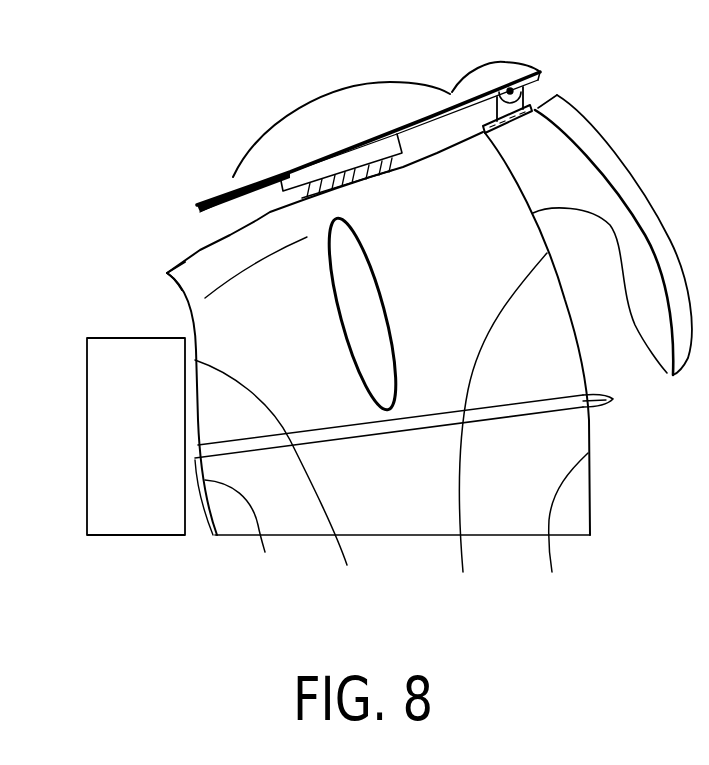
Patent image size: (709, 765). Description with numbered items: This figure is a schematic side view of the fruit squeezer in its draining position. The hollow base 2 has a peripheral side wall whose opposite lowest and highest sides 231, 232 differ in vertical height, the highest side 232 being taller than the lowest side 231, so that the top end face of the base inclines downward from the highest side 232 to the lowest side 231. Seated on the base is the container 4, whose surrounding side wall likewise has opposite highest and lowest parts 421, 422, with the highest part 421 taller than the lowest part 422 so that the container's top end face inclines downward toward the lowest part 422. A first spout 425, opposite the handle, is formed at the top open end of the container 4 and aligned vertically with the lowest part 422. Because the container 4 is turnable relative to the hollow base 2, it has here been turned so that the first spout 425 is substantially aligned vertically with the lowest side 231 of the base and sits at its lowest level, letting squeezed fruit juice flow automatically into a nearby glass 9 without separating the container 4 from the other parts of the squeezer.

The hollow base 2 is at (393, 500).
The container 4 is at (453, 210).
The glass 9 is at (133, 512).
The first spout 425 is at (167, 280).
The highest part of the surrounding side wall 421 is at (502, 433).
The lowest part of the surrounding side wall 422 is at (283, 481).
The lowest side of the peripheral side wall 231 is at (243, 537).
The highest side of the peripheral side wall 232 is at (565, 533).